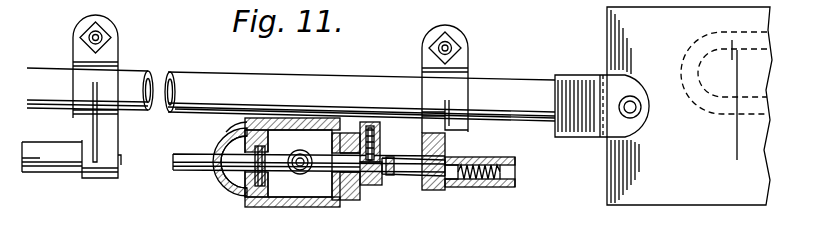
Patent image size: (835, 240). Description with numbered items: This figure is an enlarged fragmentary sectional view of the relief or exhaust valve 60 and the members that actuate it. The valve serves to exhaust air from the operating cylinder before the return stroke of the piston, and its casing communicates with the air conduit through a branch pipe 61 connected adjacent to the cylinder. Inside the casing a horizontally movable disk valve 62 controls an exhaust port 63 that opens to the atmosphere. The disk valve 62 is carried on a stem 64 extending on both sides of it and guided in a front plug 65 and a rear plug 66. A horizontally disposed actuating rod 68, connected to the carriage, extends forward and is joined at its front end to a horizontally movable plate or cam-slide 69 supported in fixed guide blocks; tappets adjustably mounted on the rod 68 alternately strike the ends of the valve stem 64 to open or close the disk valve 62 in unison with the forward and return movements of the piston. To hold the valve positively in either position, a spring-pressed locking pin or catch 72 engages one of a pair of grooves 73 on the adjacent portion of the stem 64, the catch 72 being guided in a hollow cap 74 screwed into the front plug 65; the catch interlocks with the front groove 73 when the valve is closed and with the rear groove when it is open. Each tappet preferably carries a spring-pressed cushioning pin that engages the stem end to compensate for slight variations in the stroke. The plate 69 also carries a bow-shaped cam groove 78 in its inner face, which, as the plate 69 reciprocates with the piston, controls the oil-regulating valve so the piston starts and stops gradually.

The relief or exhaust valve 60 is at (292, 206).
The branch pipe 61 is at (302, 150).
The disk valve 62 is at (261, 197).
The exhaust port 63 is at (246, 166).
The valve stem 64 is at (326, 176).
The front plug 65 is at (342, 196).
The rear plug 66 is at (232, 131).
The actuating rod 68 is at (291, 94).
The plate or cam-slide 69 is at (663, 106).
The spring-pressed locking pin or catch 72 is at (380, 156).
The groove 73 is at (390, 180).
The hollow cap 74 is at (377, 125).
The bow-shaped cam groove 78 is at (724, 96).